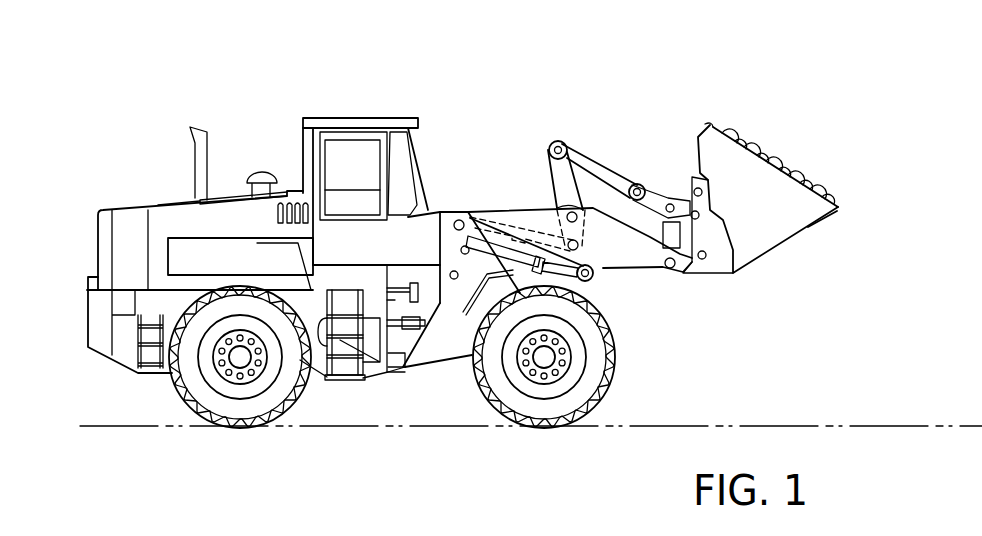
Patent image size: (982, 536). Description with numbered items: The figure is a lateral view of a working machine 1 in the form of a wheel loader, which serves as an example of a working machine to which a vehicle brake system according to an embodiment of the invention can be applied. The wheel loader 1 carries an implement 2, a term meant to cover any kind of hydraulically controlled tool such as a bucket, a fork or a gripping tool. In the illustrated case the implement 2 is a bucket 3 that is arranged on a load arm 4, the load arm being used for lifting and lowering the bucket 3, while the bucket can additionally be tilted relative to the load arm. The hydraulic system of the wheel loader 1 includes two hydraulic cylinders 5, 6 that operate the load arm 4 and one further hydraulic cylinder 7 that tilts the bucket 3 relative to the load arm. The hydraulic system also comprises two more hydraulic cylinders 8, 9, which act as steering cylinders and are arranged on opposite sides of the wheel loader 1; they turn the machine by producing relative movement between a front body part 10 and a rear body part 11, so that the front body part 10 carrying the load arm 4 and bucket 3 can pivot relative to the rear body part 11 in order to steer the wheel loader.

The working machine 1 is at (353, 67).
The implement 2 is at (782, 147).
The bucket 3 is at (753, 234).
The load arm 4 is at (638, 128).
The hydraulic cylinder 5 is at (572, 287).
The hydraulic cylinder 6 is at (522, 256).
The hydraulic cylinder 7 is at (531, 230).
The hydraulic cylinder 8 is at (435, 312).
The hydraulic cylinder 9 is at (461, 289).
The front body part 10 is at (436, 347).
The rear body part 11 is at (124, 352).